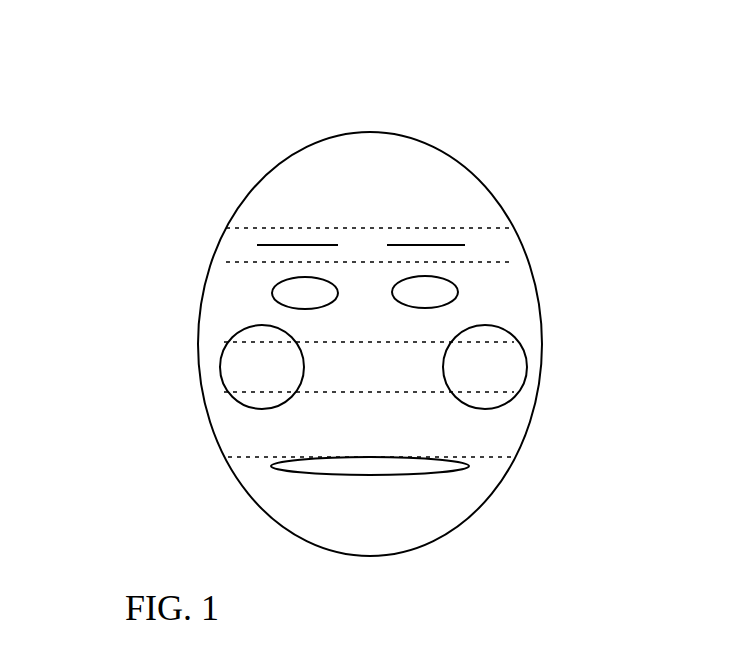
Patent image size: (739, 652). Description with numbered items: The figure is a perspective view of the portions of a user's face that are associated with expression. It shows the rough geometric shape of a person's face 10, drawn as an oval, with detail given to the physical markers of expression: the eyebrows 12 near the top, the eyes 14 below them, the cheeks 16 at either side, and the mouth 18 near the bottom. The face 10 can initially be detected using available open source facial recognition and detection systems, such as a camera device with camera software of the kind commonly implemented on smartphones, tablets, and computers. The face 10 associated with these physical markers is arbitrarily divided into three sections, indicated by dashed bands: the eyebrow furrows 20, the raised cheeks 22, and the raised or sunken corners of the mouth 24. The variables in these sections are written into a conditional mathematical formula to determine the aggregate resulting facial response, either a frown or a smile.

The person's face 10 is at (370, 131).
The eyebrows 12 is at (465, 245).
The eyes 14 is at (452, 305).
The cheeks 16 is at (524, 358).
The mouth 18 is at (466, 462).
The eyebrow furrows 20 is at (370, 250).
The raised cheeks 22 is at (412, 380).
The raised or sunken corners of the mouth 24 is at (305, 460).